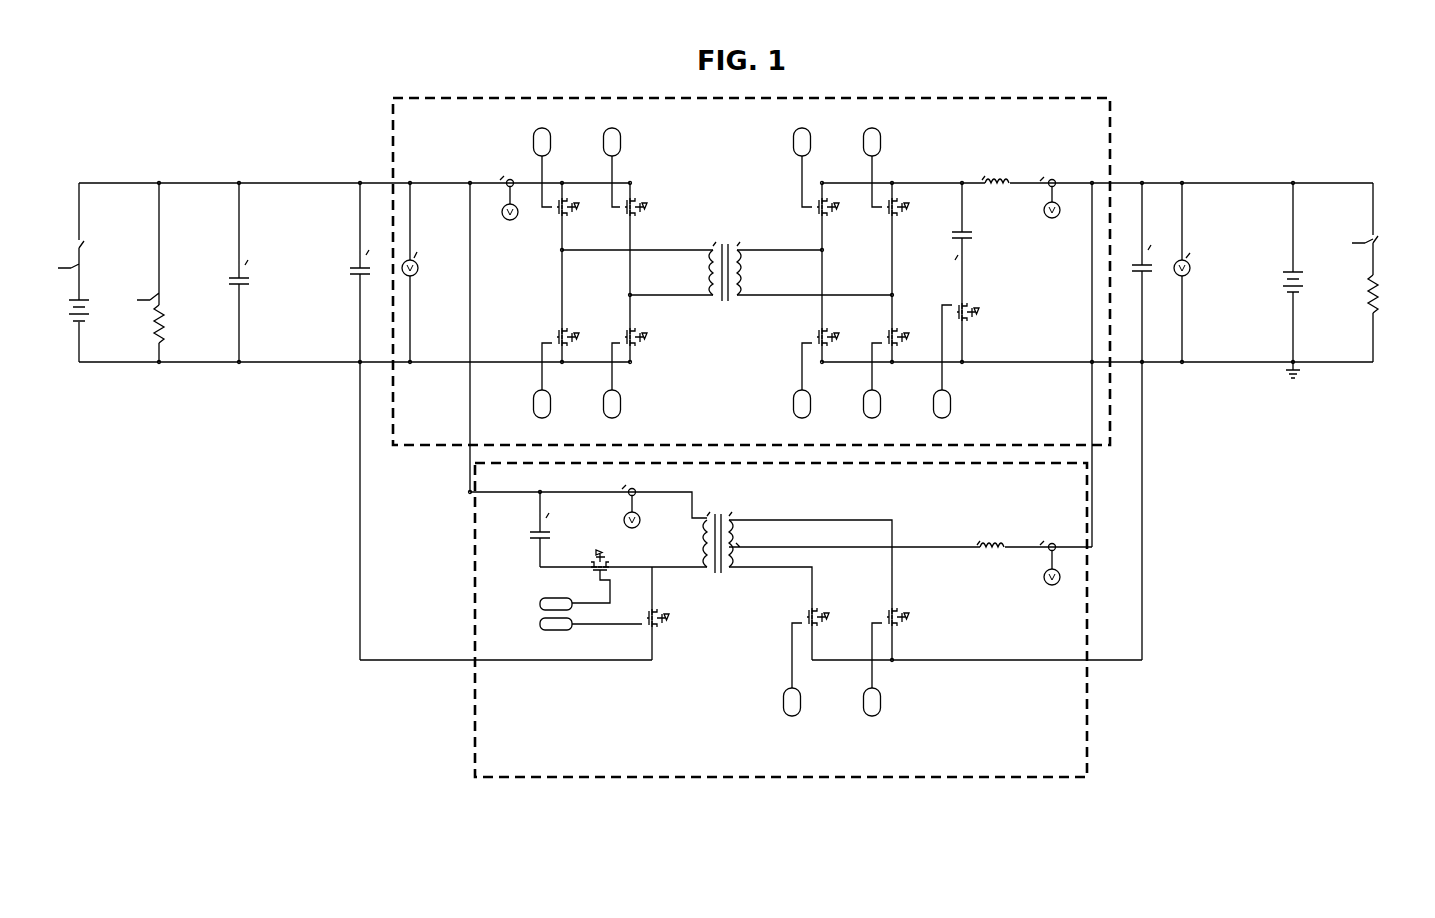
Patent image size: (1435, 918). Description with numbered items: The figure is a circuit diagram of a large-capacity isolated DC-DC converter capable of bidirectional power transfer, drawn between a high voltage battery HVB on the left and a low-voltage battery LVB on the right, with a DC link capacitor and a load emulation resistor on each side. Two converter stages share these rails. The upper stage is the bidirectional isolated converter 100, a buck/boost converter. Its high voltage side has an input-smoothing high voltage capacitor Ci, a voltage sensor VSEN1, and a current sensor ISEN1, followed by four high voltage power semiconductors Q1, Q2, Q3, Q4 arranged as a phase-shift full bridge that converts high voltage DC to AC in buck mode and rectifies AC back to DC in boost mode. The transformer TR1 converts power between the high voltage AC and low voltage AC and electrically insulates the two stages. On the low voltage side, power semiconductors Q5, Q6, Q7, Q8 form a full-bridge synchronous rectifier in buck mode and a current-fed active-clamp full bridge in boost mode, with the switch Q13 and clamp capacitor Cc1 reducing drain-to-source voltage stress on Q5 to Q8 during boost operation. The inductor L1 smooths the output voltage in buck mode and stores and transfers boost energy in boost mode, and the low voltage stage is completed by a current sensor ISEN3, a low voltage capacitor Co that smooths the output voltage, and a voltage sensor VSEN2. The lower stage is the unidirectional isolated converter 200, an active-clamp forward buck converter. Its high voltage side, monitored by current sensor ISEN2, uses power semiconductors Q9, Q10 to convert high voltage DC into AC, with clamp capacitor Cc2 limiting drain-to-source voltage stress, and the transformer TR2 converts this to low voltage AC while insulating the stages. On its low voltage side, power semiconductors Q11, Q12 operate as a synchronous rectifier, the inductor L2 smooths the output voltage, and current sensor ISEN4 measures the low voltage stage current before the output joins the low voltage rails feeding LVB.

The bidirectional isolated converter 100 is at (383, 411).
The unidirectional isolated converter 200 is at (1107, 705).
The high voltage battery HVB is at (90, 272).
The high voltage capacitor Ci is at (349, 421).
The low voltage capacitor Co is at (1135, 421).
The voltage sensor of high voltage stage VSEN1 is at (433, 272).
The voltage sensor of low voltage stage VSEN2 is at (1209, 272).
The current sensor of high voltage stage ISEN1 is at (494, 189).
The current sensor of high voltage stage ISEN2 is at (630, 498).
The current sensor of low voltage stage ISEN3 is at (1050, 187).
The current sensor of low voltage stage ISEN4 is at (1048, 553).
The high voltage power semiconductor Q1 is at (568, 172).
The high voltage power semiconductor Q2 is at (568, 373).
The high voltage power semiconductor Q3 is at (637, 172).
The high voltage power semiconductor Q4 is at (637, 373).
The low voltage power semiconductor Q5 is at (828, 172).
The low voltage power semiconductor Q6 is at (828, 373).
The low voltage power semiconductor Q7 is at (898, 172).
The low voltage power semiconductor Q8 is at (898, 373).
The high voltage power semiconductor Q9 is at (575, 572).
The high voltage power semiconductor Q10 is at (623, 613).
The low voltage power semiconductor Q11 is at (793, 655).
The low voltage power semiconductor Q12 is at (874, 653).
The low voltage power semiconductor switch Q13 is at (965, 352).
The transformer TR1 is at (725, 261).
The transformer TR2 is at (718, 533).
The inductor L1 is at (995, 170).
The inductor L2 is at (990, 534).
The clamp capacitor Cc1 is at (979, 241).
The clamp capacitor Cc2 is at (524, 529).
The low-voltage battery LVB is at (1307, 280).